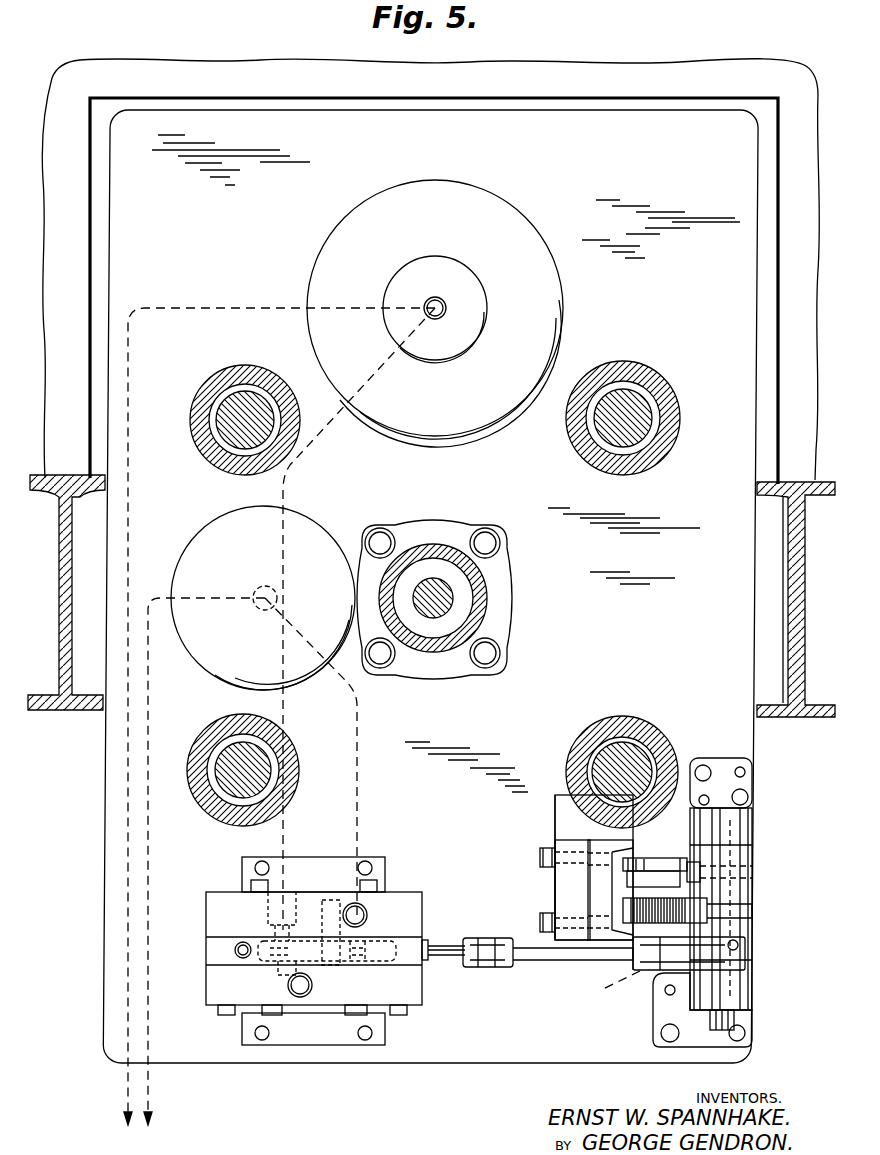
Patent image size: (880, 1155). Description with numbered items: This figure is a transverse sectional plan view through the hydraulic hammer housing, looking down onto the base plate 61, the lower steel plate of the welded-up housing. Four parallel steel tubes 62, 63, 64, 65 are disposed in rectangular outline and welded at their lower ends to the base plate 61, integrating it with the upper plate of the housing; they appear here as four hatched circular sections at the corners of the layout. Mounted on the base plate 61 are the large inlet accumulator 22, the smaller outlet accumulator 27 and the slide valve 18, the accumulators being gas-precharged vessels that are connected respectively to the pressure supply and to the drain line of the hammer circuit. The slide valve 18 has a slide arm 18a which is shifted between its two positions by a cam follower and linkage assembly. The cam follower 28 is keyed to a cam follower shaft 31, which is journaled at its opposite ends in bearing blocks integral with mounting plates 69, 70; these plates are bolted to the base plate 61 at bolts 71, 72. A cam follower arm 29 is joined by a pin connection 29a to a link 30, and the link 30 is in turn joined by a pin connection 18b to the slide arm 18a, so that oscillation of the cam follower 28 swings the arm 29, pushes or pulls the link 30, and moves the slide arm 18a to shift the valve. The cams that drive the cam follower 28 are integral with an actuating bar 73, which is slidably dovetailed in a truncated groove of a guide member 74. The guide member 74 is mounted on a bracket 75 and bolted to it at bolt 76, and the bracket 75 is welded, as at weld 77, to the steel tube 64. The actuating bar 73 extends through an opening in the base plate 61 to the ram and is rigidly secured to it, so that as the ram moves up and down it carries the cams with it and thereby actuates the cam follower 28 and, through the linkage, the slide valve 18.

The slide valve 18 is at (206, 912).
The slide arm 18a is at (444, 958).
The pin connection 18b is at (494, 966).
The inlet accumulator 22 is at (350, 223).
The outlet accumulator 27 is at (323, 532).
The cam follower 28 is at (746, 888).
The cam follower arm 29 is at (700, 966).
The pin connection 29a is at (601, 970).
The link 30 is at (548, 961).
The cam follower shaft 31 is at (730, 1020).
The base plate 61 is at (467, 110).
The tube 62 is at (246, 366).
The tube 63 is at (621, 362).
The tube 64 is at (652, 725).
The tube 65 is at (205, 725).
The mounting plate 69 is at (745, 778).
The mounting plate 70 is at (653, 1003).
The bolt 71 is at (745, 797).
The bolt 72 is at (661, 1033).
The actuating bar 73 is at (618, 893).
The guide member 74 is at (633, 850).
The bracket 75 is at (555, 878).
The bolt 76 is at (540, 855).
The weld 77 is at (563, 794).